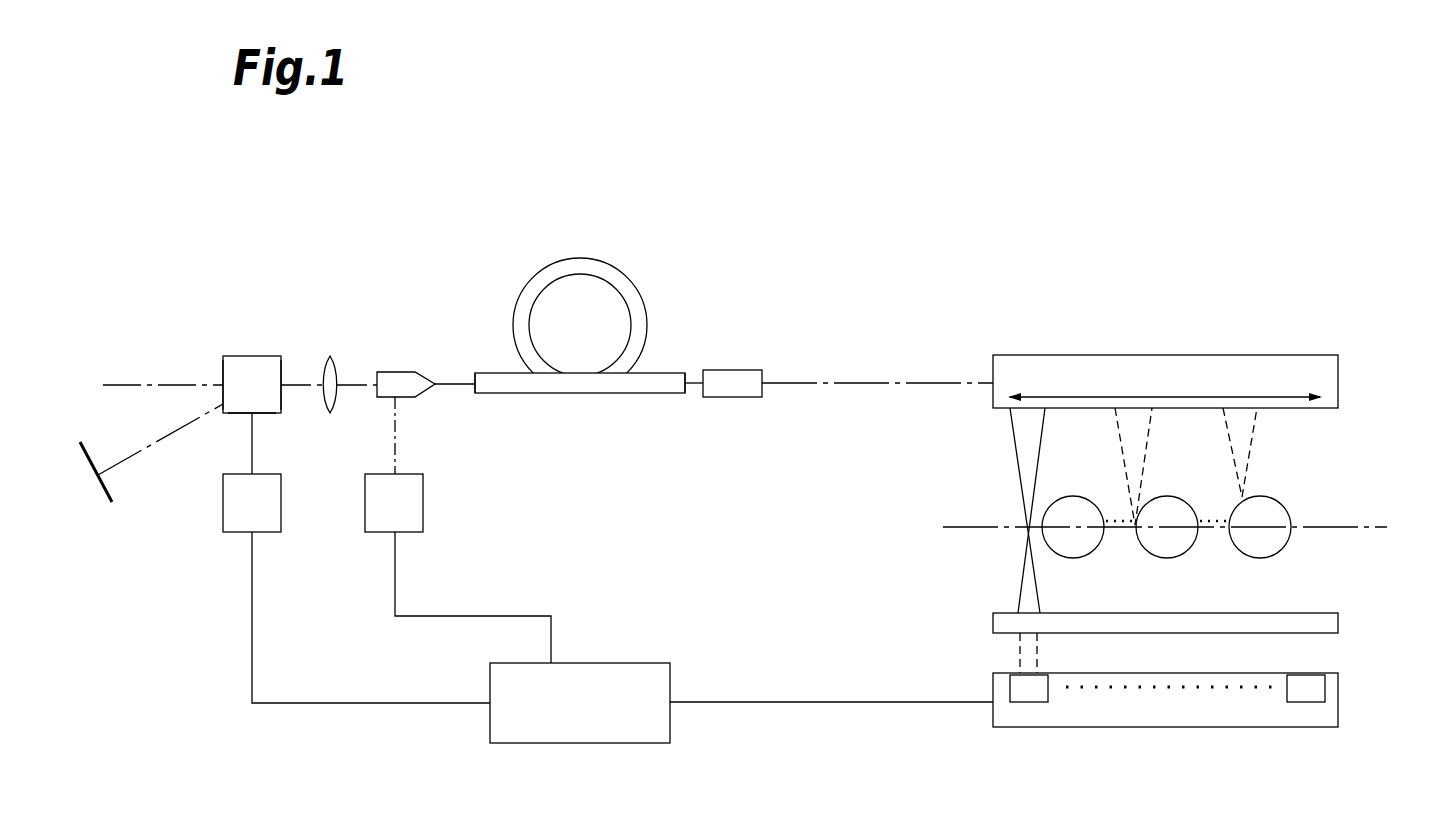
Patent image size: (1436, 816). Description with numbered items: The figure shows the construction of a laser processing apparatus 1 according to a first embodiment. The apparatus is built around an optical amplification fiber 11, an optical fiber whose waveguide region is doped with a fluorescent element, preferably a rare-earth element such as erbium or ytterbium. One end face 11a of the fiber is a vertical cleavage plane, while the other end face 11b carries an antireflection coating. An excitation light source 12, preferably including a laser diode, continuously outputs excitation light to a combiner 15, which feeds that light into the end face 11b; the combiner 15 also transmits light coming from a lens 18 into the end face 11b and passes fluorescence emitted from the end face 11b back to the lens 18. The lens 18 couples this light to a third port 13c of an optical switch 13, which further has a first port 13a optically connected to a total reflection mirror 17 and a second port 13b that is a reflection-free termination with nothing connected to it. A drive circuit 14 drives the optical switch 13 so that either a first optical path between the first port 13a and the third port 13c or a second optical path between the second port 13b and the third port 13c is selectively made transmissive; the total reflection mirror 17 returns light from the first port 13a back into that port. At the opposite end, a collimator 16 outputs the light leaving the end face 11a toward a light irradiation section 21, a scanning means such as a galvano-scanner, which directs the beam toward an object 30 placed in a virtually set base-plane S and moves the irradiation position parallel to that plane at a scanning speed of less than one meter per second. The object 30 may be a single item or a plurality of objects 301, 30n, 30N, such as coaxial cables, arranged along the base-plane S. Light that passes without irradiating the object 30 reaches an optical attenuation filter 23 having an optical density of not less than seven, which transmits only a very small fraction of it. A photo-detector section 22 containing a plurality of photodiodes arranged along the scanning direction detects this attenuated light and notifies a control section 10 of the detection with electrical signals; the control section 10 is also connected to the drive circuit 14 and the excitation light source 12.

The laser processing apparatus 1 is at (1122, 165).
The control section 10 is at (532, 743).
The optical amplification fiber 11 is at (619, 276).
The end face 11a is at (688, 394).
The end face 11b is at (473, 394).
The excitation light source 12 is at (425, 498).
The optical switch 13 is at (252, 356).
The first port 13a is at (223, 413).
The second port 13b is at (223, 380).
The third port 13c is at (283, 388).
The drive circuit 14 is at (283, 498).
The combiner 15 is at (398, 372).
The collimator 16 is at (733, 370).
The total reflection mirror 17 is at (112, 492).
The lens 18 is at (335, 363).
The light irradiation section 21 is at (1338, 383).
The photo-detector section 22 is at (1338, 702).
The optical attenuation filter 23 is at (1338, 622).
The object 30 is at (1218, 494).
The object 301 is at (1062, 497).
The object 30n is at (1155, 497).
The object 30N is at (1272, 497).
The base-plane S is at (1179, 526).